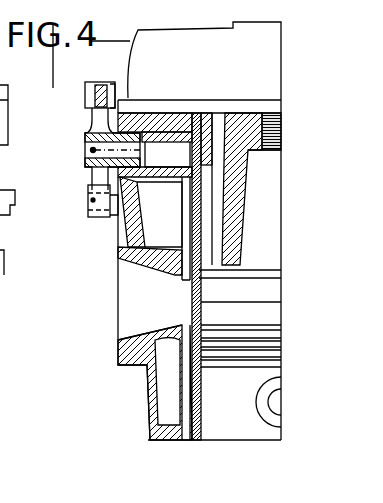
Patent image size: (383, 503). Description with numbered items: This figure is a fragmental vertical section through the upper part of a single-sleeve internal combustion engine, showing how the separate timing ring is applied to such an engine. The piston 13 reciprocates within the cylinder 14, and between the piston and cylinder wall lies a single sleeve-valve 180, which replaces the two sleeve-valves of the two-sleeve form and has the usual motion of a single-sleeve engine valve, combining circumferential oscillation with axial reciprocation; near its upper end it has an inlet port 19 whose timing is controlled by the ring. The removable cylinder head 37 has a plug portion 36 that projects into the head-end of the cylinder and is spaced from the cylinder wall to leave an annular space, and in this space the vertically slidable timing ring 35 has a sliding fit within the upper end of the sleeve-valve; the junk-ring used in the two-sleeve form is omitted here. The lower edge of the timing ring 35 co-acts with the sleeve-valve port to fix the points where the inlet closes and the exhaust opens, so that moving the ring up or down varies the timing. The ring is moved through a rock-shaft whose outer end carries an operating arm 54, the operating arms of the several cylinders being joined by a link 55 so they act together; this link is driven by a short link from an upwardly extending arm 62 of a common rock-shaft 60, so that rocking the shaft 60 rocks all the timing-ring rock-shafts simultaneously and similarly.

The piston 13 is at (241, 364).
The cylinder 14 is at (180, 412).
The inlet port 19 is at (9, 263).
The timing ring 35 is at (201, 282).
The plug portion 36 is at (236, 203).
The cylinder head 37 is at (202, 112).
The operating arm 54 is at (1, 127).
The link 55 is at (2, 73).
The rock-shaft 60 is at (9, 217).
The arm 62 is at (1, 175).
The single sleeve-valve 180 is at (188, 300).